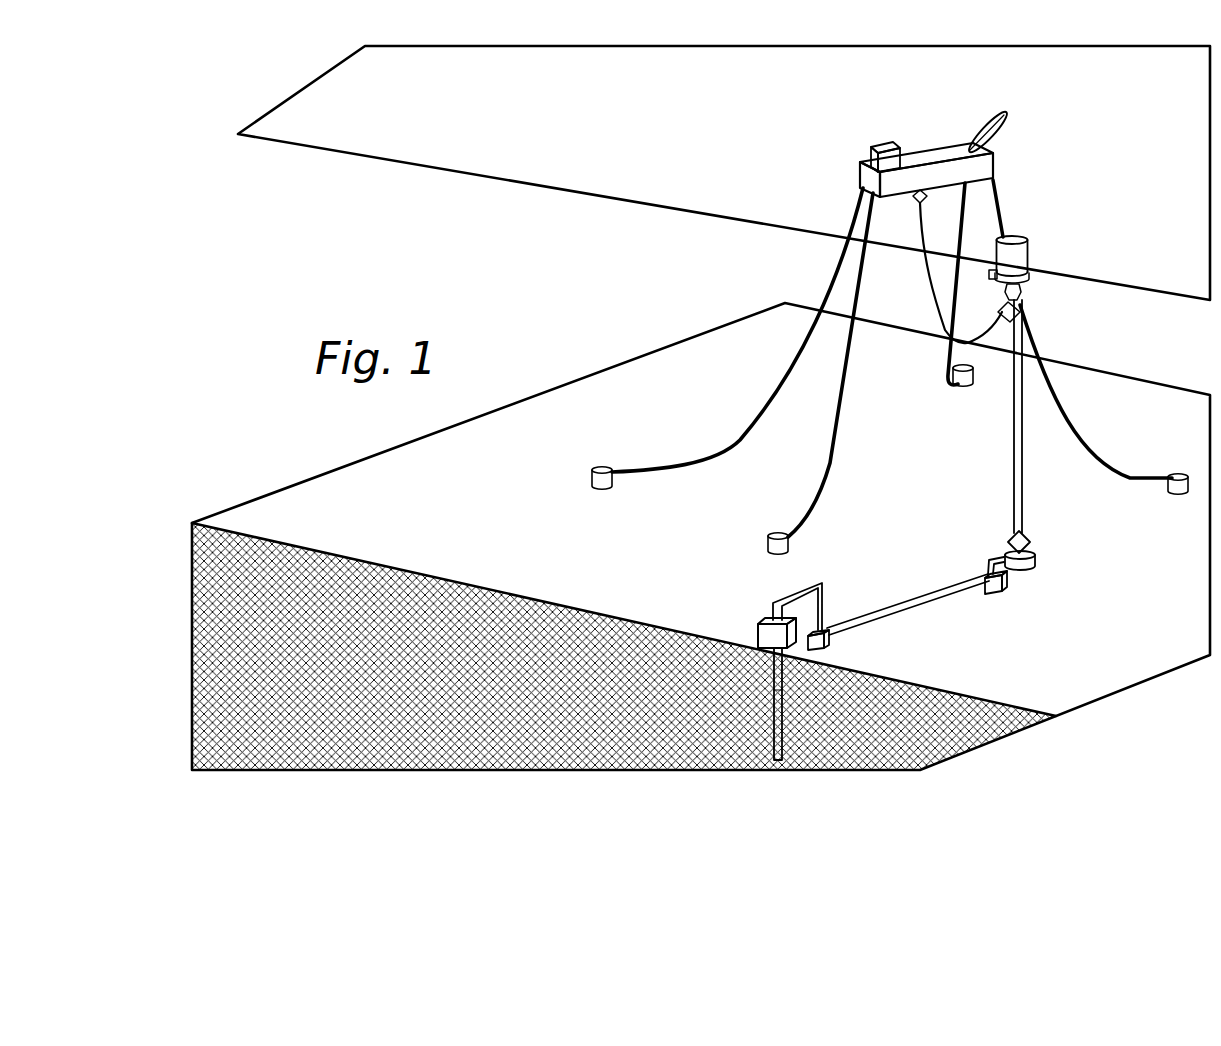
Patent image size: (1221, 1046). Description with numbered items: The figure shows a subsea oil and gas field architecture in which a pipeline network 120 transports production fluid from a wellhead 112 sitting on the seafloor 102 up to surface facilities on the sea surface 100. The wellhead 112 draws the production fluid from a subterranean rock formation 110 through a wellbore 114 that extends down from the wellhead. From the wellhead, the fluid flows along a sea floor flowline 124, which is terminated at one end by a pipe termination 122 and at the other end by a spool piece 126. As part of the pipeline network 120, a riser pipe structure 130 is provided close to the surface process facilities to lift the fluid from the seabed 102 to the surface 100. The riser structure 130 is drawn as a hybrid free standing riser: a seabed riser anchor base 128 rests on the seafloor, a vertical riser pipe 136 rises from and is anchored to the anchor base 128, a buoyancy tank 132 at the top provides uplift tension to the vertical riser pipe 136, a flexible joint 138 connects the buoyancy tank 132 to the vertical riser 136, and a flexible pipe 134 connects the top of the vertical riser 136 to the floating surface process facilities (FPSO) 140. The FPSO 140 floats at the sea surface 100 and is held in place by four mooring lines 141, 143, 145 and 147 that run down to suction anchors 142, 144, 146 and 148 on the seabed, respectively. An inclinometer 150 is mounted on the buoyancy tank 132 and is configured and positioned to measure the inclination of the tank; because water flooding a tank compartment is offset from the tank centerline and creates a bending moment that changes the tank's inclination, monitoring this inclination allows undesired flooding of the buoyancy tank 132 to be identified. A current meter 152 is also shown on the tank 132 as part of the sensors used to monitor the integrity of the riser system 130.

The sea surface 100 is at (724, 173).
The seafloor 102 is at (701, 536).
The subterranean rock formation 110 is at (624, 646).
The wellhead 112 is at (760, 628).
The wellbore 114 is at (783, 707).
The pipeline network 120 is at (940, 655).
The pipe termination 122 is at (834, 626).
The sea floor flowline 124 is at (925, 600).
The spool piece 126 is at (1003, 592).
The seabed riser anchor base 128 is at (1037, 562).
The riser pipe structure 130 is at (890, 305).
The buoyancy tank 132 is at (1032, 268).
The flexible pipe 134 is at (935, 305).
The vertical riser pipe 136 is at (1013, 455).
The flexible joint 138 is at (1022, 310).
The surface process facilities (FPSO) 140 is at (973, 167).
The mooring line 141 is at (787, 375).
The suction anchor 142 is at (606, 466).
The mooring line 143 is at (818, 495).
The suction anchor 144 is at (790, 547).
The mooring line 145 is at (943, 365).
The suction anchor 146 is at (963, 388).
The mooring line 147 is at (1138, 482).
The suction anchor 148 is at (1178, 476).
The inclinometer 150 is at (1002, 297).
The current meter 152 is at (996, 273).